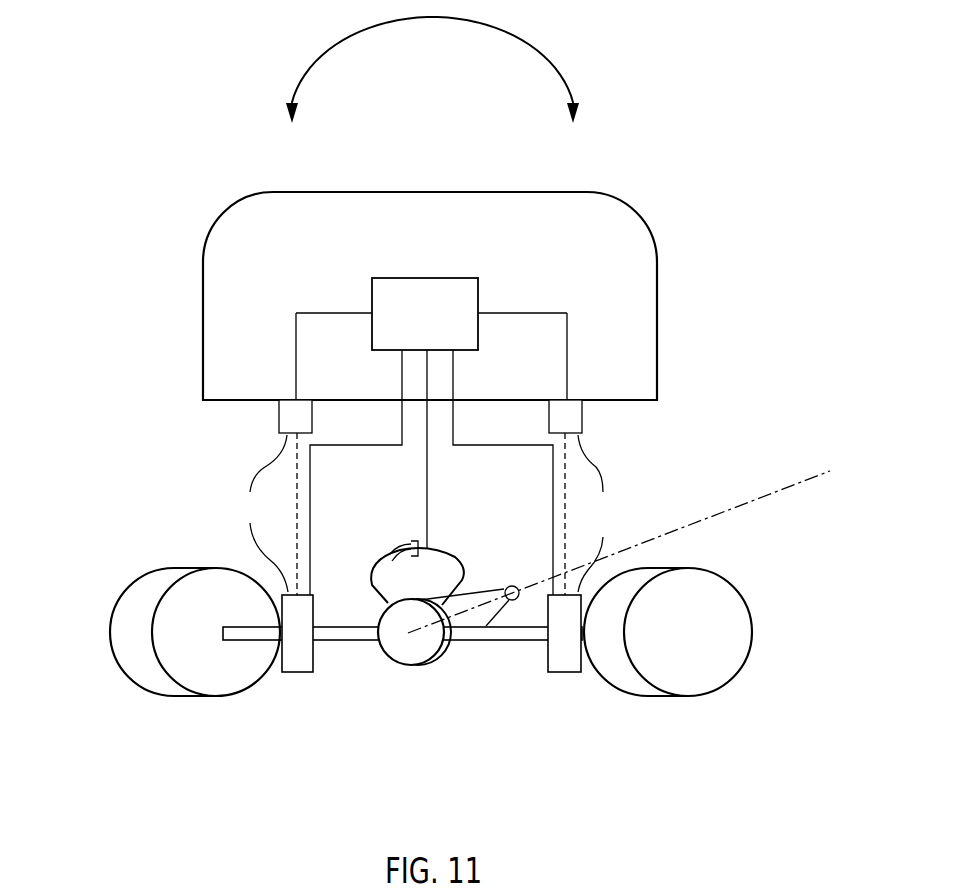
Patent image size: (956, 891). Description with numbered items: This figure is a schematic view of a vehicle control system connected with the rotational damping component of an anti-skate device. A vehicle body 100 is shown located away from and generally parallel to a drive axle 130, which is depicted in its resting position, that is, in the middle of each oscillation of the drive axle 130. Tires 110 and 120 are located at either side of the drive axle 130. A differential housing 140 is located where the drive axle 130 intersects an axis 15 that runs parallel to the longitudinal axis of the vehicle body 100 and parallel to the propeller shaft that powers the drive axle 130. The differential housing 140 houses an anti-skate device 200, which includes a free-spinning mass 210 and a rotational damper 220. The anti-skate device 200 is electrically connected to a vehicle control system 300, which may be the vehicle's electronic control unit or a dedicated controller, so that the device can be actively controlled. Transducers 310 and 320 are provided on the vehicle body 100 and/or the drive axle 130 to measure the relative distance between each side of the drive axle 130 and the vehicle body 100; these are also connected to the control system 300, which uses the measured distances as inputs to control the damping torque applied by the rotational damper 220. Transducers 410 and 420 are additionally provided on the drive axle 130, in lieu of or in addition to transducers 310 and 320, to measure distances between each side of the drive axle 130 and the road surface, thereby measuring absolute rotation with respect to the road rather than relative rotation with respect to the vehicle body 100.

The vehicle body 100 is at (203, 292).
The vehicle control system 300 is at (446, 327).
The transducer 310 is at (271, 497).
The transducer 320 is at (585, 497).
The tire 110 is at (117, 610).
The tire 120 is at (747, 607).
The drive axle 130 is at (507, 642).
The anti-skate device 200 is at (423, 647).
The free-spinning mass 210 is at (383, 655).
The rotational damper 220 is at (440, 553).
The differential housing 140 is at (445, 653).
The axis 15 is at (810, 480).
The transducer 410 is at (288, 673).
The transducer 420 is at (578, 673).